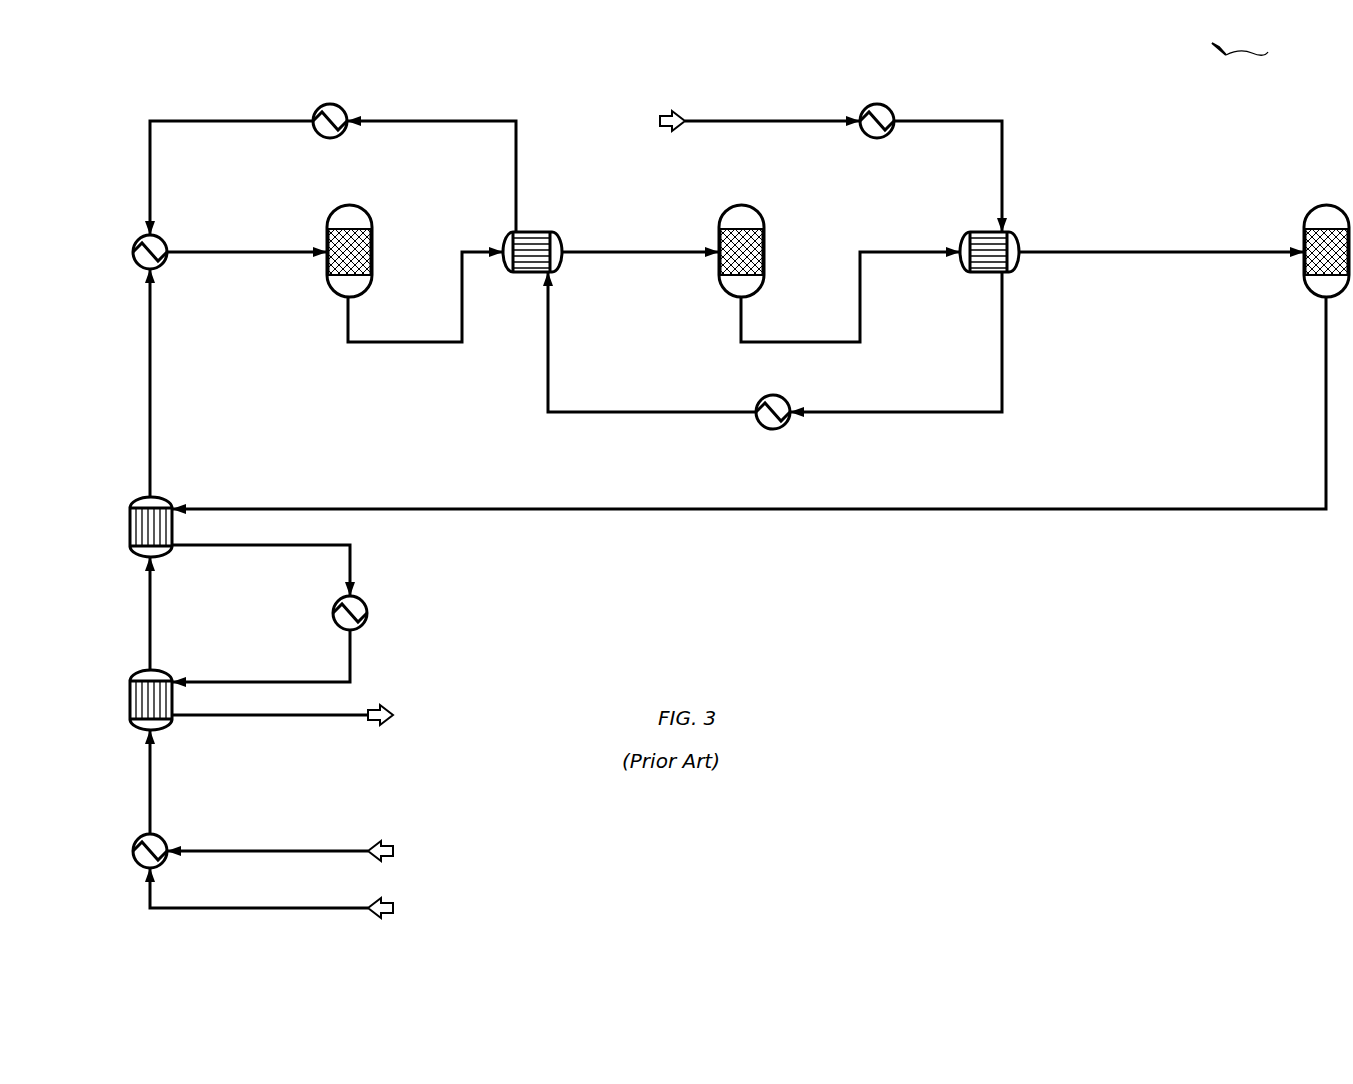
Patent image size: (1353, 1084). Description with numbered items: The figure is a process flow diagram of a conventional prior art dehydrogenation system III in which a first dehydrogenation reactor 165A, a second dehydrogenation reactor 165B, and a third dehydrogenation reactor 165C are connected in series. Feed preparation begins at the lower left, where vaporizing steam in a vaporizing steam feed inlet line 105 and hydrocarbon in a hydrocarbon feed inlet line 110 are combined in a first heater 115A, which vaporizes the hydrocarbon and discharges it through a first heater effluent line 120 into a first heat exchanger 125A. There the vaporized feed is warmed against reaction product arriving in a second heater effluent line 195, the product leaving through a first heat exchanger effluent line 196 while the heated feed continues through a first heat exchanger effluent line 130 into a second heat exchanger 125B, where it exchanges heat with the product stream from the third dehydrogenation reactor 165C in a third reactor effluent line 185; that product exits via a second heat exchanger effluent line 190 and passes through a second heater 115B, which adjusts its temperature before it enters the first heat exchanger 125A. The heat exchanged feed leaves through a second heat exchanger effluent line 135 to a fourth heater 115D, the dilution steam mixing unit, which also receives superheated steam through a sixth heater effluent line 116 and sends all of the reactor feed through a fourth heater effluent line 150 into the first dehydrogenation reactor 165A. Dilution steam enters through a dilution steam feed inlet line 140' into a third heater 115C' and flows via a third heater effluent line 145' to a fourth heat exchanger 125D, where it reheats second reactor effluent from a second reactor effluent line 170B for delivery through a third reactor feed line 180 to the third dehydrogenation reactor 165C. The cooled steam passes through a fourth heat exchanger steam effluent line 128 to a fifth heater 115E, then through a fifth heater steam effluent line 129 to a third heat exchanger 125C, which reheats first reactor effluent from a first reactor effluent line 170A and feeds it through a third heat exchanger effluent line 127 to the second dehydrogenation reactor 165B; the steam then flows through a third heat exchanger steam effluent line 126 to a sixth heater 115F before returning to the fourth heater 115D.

The vaporizing steam feed inlet line 105 is at (245, 910).
The hydrocarbon feed inlet line 110 is at (258, 850).
The first heater 115A is at (132, 852).
The second heater 115B is at (368, 612).
The third heater 115C' is at (886, 93).
The fourth heater 115D is at (132, 252).
The fifth heater 115E is at (775, 430).
The sixth heater 115F is at (333, 103).
The sixth heater effluent line 116 is at (190, 120).
The first heater effluent line 120 is at (153, 798).
The first heat exchanger 125A is at (130, 700).
The second heat exchanger 125B is at (130, 530).
The third heat exchanger 125C is at (521, 275).
The fourth heat exchanger 125D is at (979, 275).
The third heat exchanger steam effluent line 126 is at (500, 120).
The third heat exchanger effluent line 127 is at (643, 251).
The fourth heat exchanger steam effluent line 128 is at (903, 411).
The fifth heater steam effluent line 129 is at (648, 411).
The first heat exchanger effluent line 130 is at (153, 620).
The second heat exchanger effluent line 135 is at (153, 366).
The dilution steam feed inlet line 140' is at (759, 98).
The third heater effluent line 145' is at (952, 148).
The fourth heater effluent line 150 is at (235, 251).
The first dehydrogenation reactor 165A is at (373, 247).
The second dehydrogenation reactor 165B is at (765, 247).
The third dehydrogenation reactor 165C is at (1314, 207).
The first reactor effluent line 170A is at (412, 345).
The second reactor effluent line 170B is at (862, 291).
The third reactor feed line 180 is at (1162, 251).
The third reactor effluent line 185 is at (720, 508).
The second heat exchanger effluent line 190 is at (280, 548).
The second heater effluent line 195 is at (246, 681).
The first heat exchanger effluent line 196 is at (280, 718).
The conventional dehydrogenation system III is at (1252, 53).